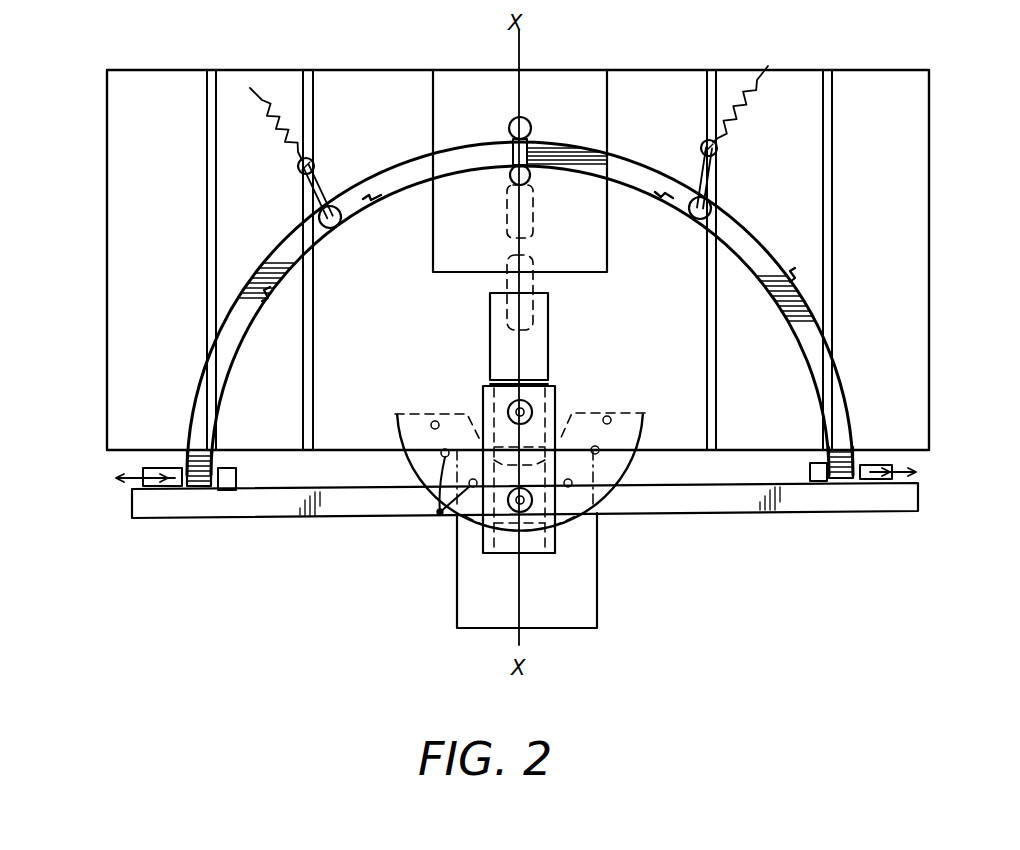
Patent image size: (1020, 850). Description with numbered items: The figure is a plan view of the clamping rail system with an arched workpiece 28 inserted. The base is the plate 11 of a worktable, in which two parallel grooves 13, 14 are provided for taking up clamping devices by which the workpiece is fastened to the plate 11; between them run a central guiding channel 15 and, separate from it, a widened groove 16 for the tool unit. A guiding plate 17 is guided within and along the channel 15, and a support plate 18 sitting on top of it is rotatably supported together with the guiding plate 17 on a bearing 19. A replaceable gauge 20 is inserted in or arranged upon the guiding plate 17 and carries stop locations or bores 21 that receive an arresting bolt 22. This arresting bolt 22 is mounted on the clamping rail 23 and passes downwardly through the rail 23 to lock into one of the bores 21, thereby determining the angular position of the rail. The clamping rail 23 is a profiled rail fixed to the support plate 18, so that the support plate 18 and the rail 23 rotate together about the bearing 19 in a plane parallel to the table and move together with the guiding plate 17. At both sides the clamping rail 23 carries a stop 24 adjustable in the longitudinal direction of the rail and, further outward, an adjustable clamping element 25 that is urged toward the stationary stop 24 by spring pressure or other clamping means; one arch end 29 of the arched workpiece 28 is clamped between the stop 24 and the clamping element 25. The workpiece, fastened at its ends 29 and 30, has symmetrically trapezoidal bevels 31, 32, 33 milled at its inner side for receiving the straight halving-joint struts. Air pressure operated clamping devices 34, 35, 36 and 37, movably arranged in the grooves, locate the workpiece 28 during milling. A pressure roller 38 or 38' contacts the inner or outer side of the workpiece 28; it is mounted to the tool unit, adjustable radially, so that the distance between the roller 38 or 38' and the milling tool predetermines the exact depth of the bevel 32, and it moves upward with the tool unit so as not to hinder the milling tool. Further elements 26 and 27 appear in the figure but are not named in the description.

The plate 11 is at (107, 261).
The groove 13 is at (707, 84).
The groove 14 is at (217, 108).
The central guiding channel 15 is at (490, 344).
The widened groove 16 is at (456, 272).
The guiding plate 17 is at (602, 397).
The support plate 18 is at (556, 392).
The bearing 19 is at (524, 407).
The replaceable gauge 20 is at (462, 540).
The bores 21 is at (438, 515).
The arresting bolt 22 is at (526, 512).
The clamping rail 23 is at (715, 500).
The stop 24 is at (820, 478).
The adjustable clamping element 25 is at (875, 480).
The stop block 26 is at (227, 483).
The slide block 27 is at (174, 482).
The arched workpiece 28 is at (443, 164).
The arch end 29 is at (856, 443).
The arch end 30 is at (190, 449).
The bevel 31 is at (657, 196).
The bevel 32 is at (531, 160).
The bevel 33 is at (378, 201).
The air pressure operated clamping device 34 is at (709, 214).
The air pressure operated clamping device 35 is at (717, 151).
The air pressure operated clamping device 36 is at (331, 228).
The air pressure operated clamping device 37 is at (299, 171).
The pressure roller 38 is at (550, 247).
The pressure roller 38' is at (547, 87).